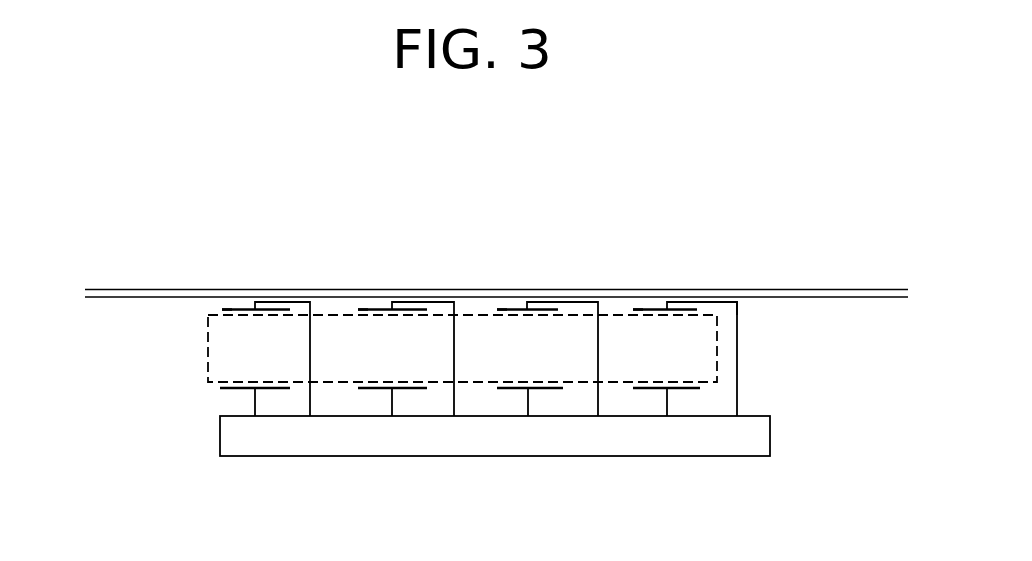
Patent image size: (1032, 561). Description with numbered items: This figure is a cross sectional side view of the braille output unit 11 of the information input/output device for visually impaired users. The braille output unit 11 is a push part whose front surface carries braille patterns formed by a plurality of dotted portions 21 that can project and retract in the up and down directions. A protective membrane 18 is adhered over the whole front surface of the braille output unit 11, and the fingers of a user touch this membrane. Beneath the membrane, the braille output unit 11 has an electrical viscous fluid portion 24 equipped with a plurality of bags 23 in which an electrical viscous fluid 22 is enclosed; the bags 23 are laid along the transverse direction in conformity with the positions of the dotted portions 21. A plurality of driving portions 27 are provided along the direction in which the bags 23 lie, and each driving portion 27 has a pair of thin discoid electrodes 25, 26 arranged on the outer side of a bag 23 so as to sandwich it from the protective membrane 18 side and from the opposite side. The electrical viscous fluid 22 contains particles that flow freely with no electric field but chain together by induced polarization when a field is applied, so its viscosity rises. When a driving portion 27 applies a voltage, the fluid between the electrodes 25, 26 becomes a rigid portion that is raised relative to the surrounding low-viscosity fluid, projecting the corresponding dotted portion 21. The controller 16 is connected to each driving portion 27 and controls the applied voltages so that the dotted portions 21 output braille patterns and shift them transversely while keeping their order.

The braille output unit 11 is at (135, 361).
The controller 16 is at (297, 450).
The protective membrane 18 is at (842, 290).
The dotted portions 21 is at (195, 304).
The electrical viscous fluid 22 is at (695, 348).
The bags 23 is at (718, 363).
The electrical viscous fluid portion 24 is at (712, 313).
The electrode 25 is at (240, 309).
The electrode 26 is at (232, 390).
The driving portions 27 is at (226, 310).